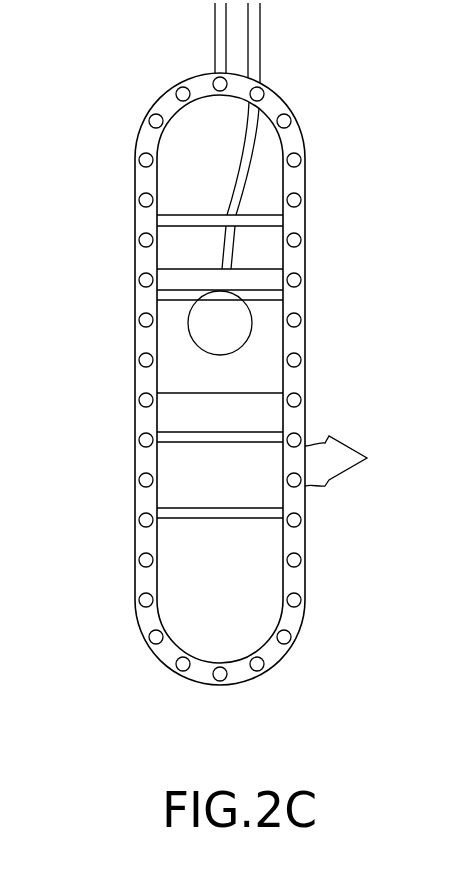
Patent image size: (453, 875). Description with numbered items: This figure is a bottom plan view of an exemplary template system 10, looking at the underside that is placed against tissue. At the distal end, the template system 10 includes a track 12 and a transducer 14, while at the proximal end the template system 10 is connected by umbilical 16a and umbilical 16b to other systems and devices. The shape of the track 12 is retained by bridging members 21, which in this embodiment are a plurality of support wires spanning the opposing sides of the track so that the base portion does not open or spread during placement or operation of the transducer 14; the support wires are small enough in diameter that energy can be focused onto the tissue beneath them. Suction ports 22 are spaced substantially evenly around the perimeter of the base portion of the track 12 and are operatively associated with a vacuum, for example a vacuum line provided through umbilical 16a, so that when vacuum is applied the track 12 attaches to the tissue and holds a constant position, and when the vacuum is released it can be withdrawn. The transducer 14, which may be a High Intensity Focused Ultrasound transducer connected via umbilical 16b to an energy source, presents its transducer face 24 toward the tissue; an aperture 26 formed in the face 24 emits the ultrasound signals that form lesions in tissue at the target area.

The template system 10 is at (40, 236).
The track 12 is at (303, 138).
The transducer 14 is at (290, 283).
The umbilical 16a is at (214, 33).
The umbilical 16b is at (261, 33).
The bridging member 21 is at (182, 509).
The suction port 22 is at (351, 461).
The transducer face 24 is at (232, 385).
The aperture 26 is at (227, 333).